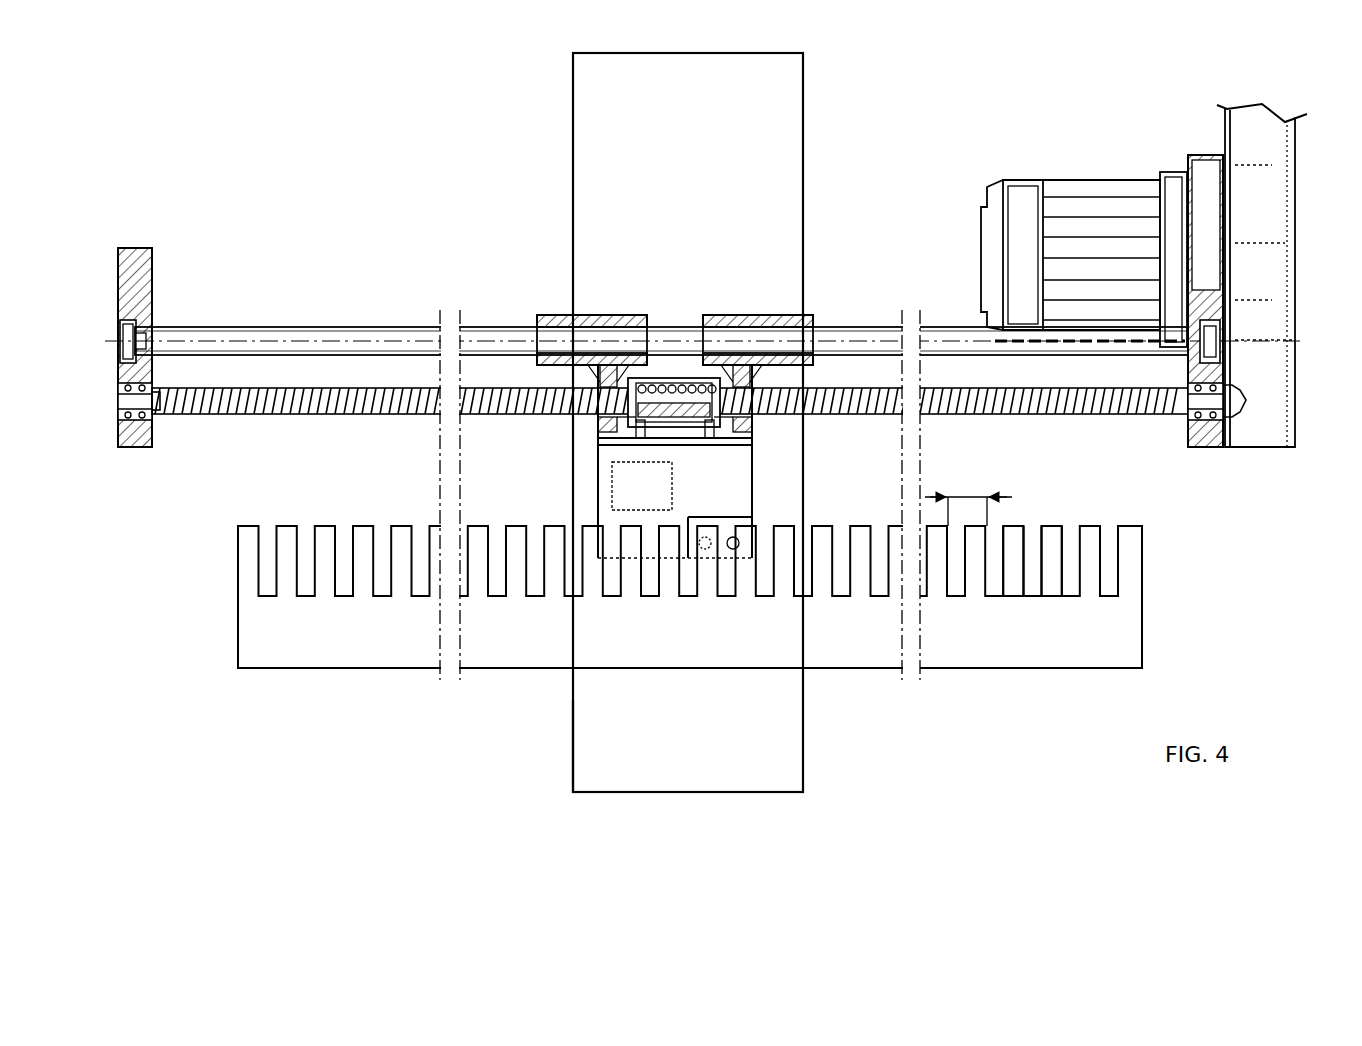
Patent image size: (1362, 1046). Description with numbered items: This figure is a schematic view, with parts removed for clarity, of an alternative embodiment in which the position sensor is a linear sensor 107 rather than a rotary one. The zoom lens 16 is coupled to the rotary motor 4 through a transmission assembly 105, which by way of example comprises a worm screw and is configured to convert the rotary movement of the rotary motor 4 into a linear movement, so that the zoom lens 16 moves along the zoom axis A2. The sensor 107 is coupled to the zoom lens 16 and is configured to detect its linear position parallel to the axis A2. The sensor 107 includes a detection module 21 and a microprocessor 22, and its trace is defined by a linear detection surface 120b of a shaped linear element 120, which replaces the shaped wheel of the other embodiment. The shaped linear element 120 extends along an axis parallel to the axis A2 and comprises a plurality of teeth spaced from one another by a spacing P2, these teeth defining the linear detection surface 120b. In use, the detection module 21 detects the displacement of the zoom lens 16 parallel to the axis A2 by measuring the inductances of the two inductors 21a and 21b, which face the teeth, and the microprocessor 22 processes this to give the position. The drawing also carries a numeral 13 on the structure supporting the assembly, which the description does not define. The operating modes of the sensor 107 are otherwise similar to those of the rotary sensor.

The zoom lens 16 is at (766, 126).
The rotary motor 4 is at (1118, 205).
The zoom axis A2 is at (1240, 346).
The microprocessor 22 is at (620, 490).
The sensor 107 is at (727, 465).
The detection module 21 is at (725, 528).
The inductor 21a is at (706, 549).
The inductor 21b is at (733, 550).
The linear detection surface 120b is at (228, 582).
The shaped linear element 120 is at (1023, 636).
The spacing P2 is at (968, 498).
The transmission assembly 105 is at (1124, 436).
The column assembly 13 is at (598, 755).